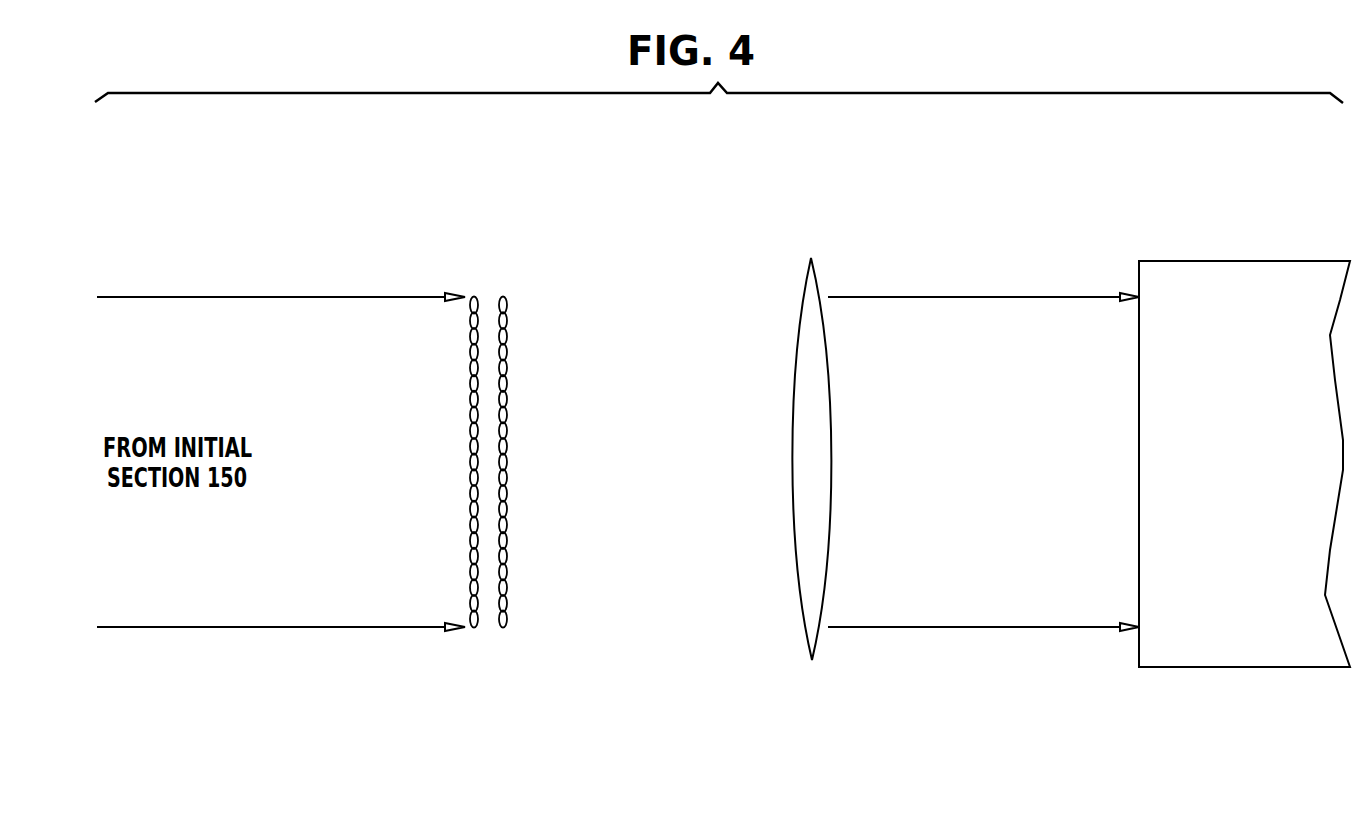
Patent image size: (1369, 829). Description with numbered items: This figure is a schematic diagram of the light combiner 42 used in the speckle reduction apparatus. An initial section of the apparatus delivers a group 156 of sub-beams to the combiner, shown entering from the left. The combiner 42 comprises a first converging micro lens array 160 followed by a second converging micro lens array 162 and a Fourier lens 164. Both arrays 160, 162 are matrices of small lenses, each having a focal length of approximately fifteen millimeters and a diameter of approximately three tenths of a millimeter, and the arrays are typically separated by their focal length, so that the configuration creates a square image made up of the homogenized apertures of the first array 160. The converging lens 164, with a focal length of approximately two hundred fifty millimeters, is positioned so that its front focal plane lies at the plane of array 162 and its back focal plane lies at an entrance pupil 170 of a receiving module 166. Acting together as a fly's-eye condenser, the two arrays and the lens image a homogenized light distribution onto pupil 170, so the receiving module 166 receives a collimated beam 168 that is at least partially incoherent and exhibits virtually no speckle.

The light combiner 42 is at (473, 178).
The group of sub-beams 156 is at (264, 290).
The first converging micro lens array 160 is at (474, 297).
The second converging micro lens array 162 is at (504, 299).
The Fourier lens 164 is at (811, 258).
The receiving module 166 is at (1220, 667).
The collimated beam 168 is at (985, 287).
The entrance pupil 170 is at (1139, 443).